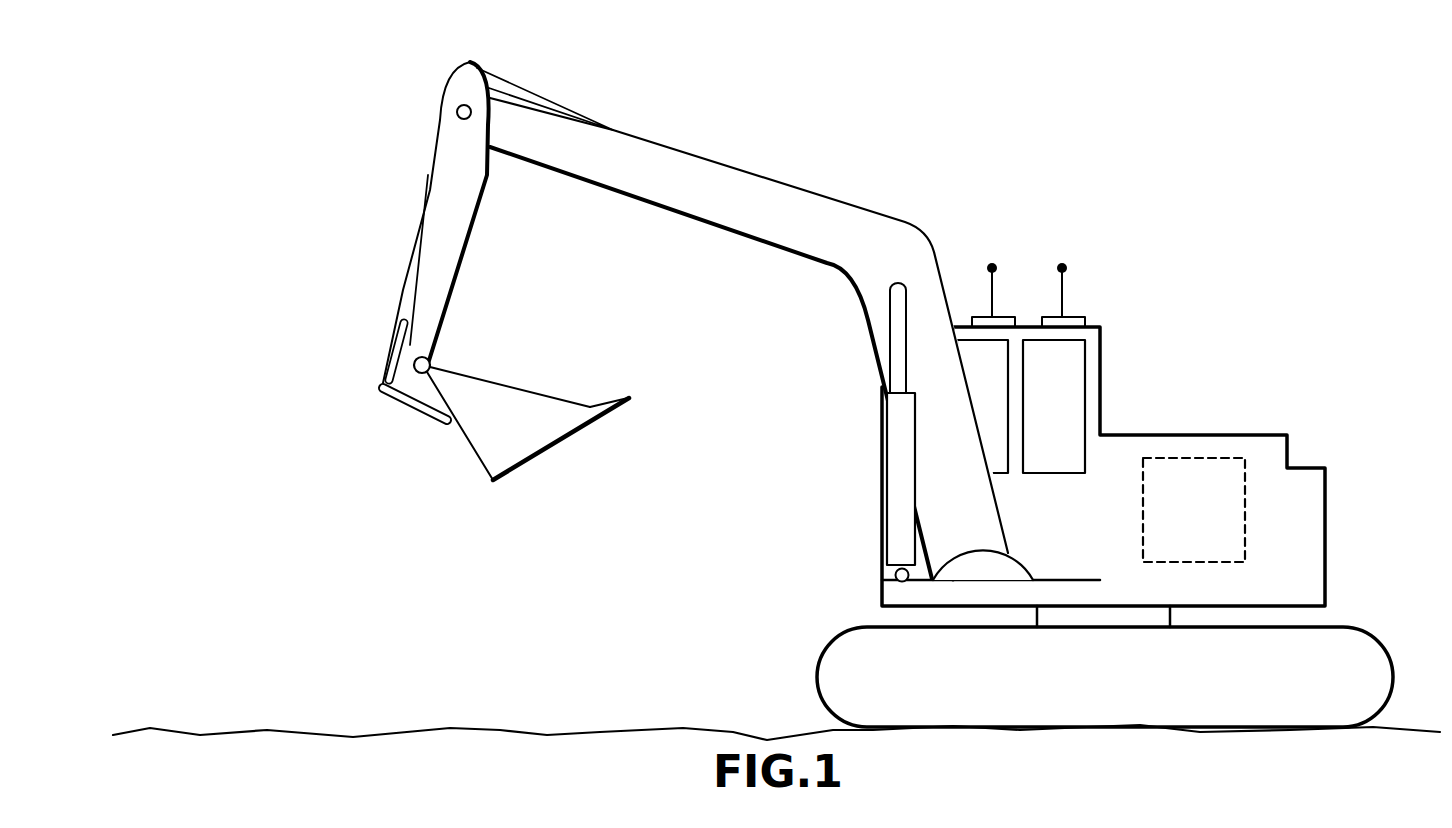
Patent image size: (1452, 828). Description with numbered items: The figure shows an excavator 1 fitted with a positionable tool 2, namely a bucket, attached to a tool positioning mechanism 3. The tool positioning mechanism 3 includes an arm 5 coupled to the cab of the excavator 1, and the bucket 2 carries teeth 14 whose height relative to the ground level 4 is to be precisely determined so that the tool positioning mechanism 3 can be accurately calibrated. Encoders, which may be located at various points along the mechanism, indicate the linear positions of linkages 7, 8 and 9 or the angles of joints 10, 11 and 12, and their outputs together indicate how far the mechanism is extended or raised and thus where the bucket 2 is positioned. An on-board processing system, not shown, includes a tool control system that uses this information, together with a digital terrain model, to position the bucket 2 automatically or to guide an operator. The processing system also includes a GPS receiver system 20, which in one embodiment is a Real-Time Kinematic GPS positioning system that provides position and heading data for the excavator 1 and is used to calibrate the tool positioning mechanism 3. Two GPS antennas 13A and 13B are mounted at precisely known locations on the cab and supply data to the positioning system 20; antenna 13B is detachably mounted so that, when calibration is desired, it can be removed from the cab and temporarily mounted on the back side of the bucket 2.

The excavator 1 is at (1311, 359).
The positionable tool 2 is at (517, 417).
The tool positioning mechanism 3 is at (692, 309).
The ground level 4 is at (275, 727).
The arm 5 is at (805, 188).
The linkage 7 is at (896, 322).
The linkage 8 is at (520, 88).
The linkage 9 is at (403, 297).
The joint 10 is at (446, 352).
The joint 11 is at (505, 165).
The joint 12 is at (1030, 552).
The GPS antenna 13A is at (998, 288).
The GPS antenna 13B is at (1067, 300).
The teeth 14 is at (612, 402).
The GPS receiver system 20 is at (1247, 507).